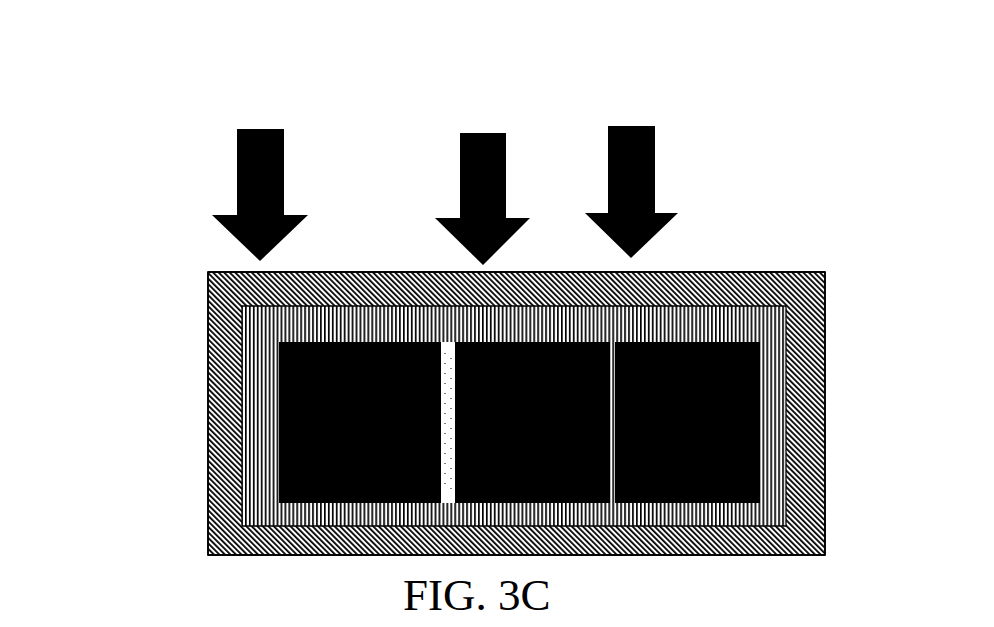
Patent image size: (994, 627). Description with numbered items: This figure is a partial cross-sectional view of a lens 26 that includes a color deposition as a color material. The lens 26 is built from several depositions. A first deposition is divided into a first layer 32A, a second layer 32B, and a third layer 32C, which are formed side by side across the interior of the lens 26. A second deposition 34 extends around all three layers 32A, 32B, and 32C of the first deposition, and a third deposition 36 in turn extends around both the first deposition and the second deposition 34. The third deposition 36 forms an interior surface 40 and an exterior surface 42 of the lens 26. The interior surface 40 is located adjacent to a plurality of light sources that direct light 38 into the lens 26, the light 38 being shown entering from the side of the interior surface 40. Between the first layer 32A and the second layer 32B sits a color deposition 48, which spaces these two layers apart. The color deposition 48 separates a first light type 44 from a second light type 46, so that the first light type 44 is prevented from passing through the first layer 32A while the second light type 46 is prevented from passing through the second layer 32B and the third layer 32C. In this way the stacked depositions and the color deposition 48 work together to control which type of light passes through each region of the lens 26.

The lens 26 is at (138, 189).
The first layer 32A is at (313, 330).
The second layer 32B is at (471, 297).
The third layer 32C is at (651, 296).
The second deposition 34 is at (759, 290).
The third deposition 36 is at (800, 440).
The light 38 is at (260, 120).
The interior surface 40 is at (215, 265).
The exterior surface 42 is at (237, 547).
The first light type 44 is at (834, 289).
The second light type 46 is at (194, 216).
The color deposition 48 is at (442, 340).